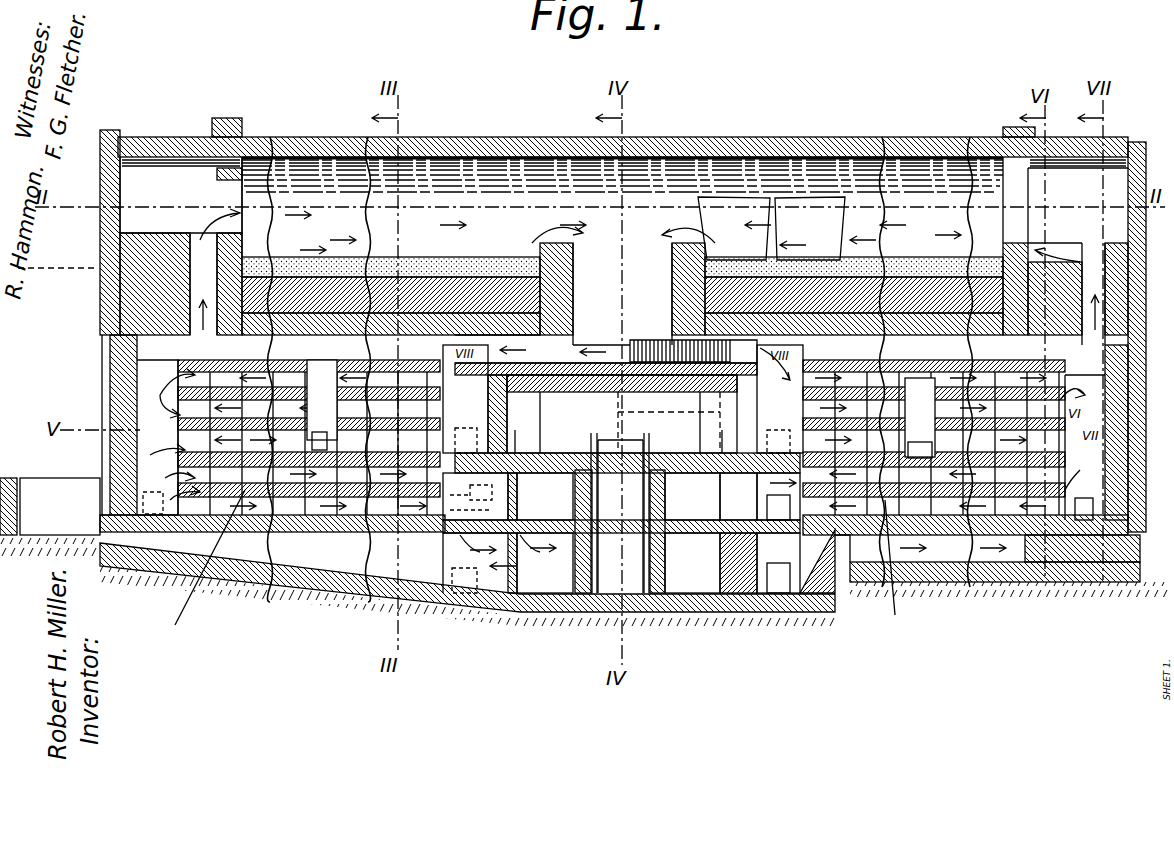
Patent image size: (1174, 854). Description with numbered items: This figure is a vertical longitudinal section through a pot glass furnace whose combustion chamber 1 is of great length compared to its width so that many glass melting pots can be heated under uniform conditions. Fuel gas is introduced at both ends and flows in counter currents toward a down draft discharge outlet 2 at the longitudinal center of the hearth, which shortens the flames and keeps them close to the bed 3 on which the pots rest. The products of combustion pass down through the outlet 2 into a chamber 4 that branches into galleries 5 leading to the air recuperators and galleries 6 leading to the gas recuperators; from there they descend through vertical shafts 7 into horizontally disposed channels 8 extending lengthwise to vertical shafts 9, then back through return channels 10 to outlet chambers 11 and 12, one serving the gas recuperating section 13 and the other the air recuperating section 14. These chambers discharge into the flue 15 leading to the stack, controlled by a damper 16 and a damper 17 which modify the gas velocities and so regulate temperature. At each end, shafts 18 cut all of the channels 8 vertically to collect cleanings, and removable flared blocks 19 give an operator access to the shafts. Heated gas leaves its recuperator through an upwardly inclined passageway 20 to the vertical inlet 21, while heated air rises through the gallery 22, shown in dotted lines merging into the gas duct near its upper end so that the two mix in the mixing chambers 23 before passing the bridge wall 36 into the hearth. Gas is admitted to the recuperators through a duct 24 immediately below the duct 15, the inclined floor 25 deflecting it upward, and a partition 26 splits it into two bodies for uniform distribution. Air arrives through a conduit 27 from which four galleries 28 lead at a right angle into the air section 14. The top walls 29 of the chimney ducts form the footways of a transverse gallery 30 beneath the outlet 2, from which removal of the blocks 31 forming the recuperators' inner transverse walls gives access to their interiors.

The combustion chamber 1 is at (508, 222).
The down draft discharge outlet 2 is at (623, 286).
The bed of the hearth 3 is at (330, 266).
The chamber 4 is at (648, 345).
The galleries 5 is at (739, 352).
The galleries 6 is at (606, 349).
The vertical shafts 7 is at (623, 399).
The horizontally disposed channels 8 is at (621, 440).
The vertical shafts 9 is at (618, 464).
The horizontally disposed return channels 10 is at (616, 496).
The outlet chamber 11 is at (475, 496).
The outlet chamber 12 is at (778, 496).
The gas recuperating section 13 is at (197, 562).
The air recuperating section 14 is at (915, 636).
The flue 15 is at (632, 496).
The damper 16 is at (527, 441).
The damper 17 is at (711, 440).
The shafts 18 is at (621, 408).
The removable flared blocks 19 is at (98, 503).
The upwardly inclined passageway 20 is at (197, 240).
The vertical inlet 21 is at (243, 168).
The gallery 22 is at (1116, 235).
The mixing chambers 23 is at (624, 200).
The duct 24 is at (600, 563).
The floor 25 is at (300, 530).
The partition 26 is at (400, 572).
The conduit 27 is at (796, 561).
The galleries 28 is at (962, 540).
The top walls 29 is at (580, 466).
The transverse gallery 30 is at (622, 414).
The blocks 31 is at (532, 435).
The bridge wall 36 is at (1010, 260).